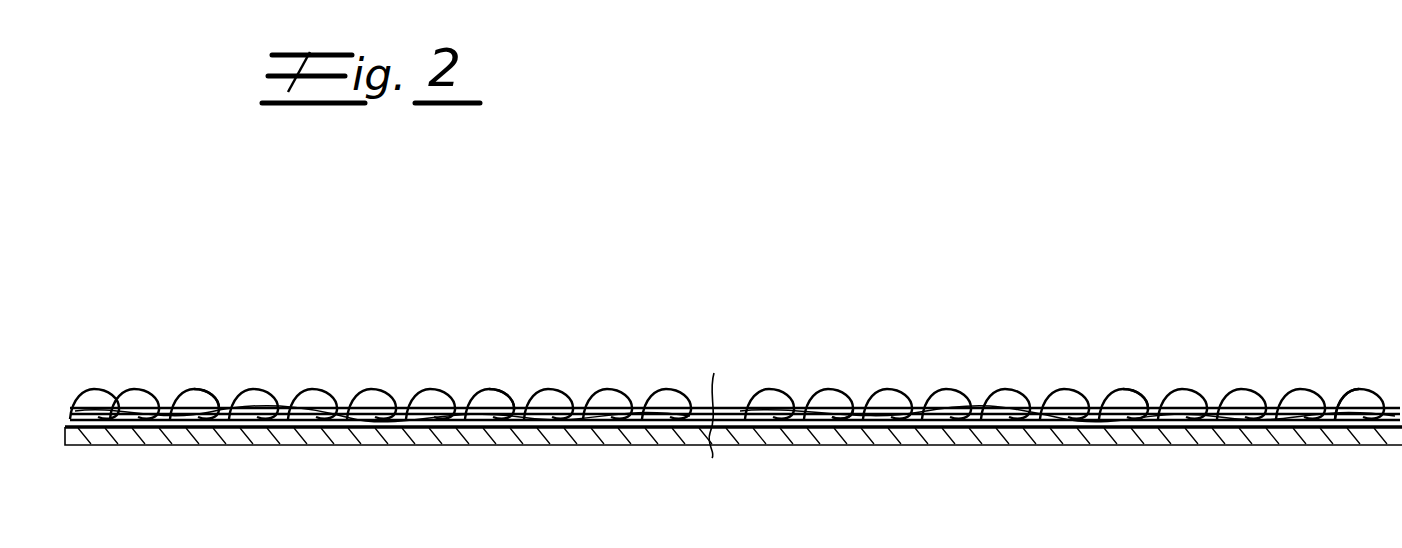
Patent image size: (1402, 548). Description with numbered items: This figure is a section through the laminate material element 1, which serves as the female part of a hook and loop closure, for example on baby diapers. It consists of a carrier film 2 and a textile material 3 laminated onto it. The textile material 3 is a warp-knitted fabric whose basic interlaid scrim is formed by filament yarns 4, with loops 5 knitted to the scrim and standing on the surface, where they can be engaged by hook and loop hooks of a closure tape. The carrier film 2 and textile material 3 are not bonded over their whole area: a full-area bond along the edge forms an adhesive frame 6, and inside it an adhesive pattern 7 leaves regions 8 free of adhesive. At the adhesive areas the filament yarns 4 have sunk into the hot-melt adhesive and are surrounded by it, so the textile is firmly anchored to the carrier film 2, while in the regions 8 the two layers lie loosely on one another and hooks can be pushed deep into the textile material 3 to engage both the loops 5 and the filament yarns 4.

The laminate material element 1 is at (939, 286).
The carrier film 2 is at (955, 432).
The textile material 3 is at (780, 378).
The filament yarns 4 is at (403, 412).
The loops 5 is at (473, 395).
The adhesive frame 6 is at (223, 391).
The adhesive pattern 7 is at (860, 384).
The regions free of adhesive 8 is at (510, 388).